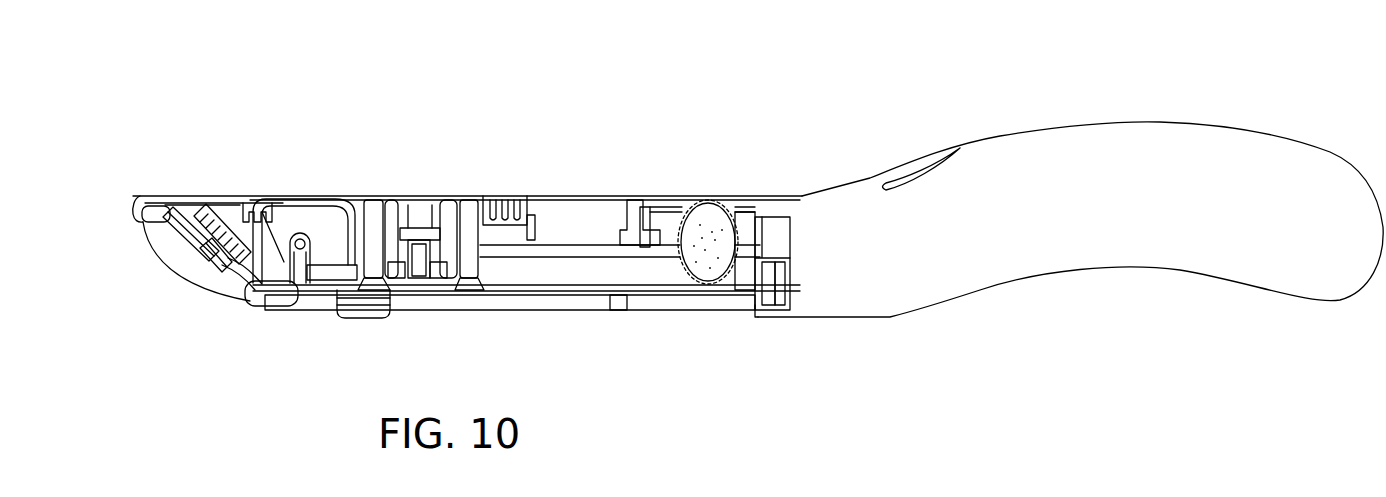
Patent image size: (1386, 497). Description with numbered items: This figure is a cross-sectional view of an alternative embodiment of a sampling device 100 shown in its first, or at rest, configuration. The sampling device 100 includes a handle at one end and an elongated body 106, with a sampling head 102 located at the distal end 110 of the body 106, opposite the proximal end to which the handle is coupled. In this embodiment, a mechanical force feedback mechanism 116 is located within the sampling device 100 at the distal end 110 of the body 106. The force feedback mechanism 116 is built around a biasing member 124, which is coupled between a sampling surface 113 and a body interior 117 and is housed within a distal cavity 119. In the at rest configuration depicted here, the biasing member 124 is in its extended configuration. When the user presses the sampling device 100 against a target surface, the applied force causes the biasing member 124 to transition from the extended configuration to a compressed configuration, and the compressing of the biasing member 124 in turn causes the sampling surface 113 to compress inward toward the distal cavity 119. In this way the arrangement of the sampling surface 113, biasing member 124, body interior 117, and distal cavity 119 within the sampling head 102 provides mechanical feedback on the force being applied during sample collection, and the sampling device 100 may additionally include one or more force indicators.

The sampling device 100 is at (1231, 104).
The sampling head 102 is at (203, 154).
The body 106 is at (592, 195).
The distal end 110 is at (183, 196).
The sampling surface 113 is at (197, 282).
The mechanical force feedback mechanism 116 is at (186, 270).
The body interior 117 is at (262, 287).
The distal cavity 119 is at (243, 245).
The biasing member 124 is at (205, 248).